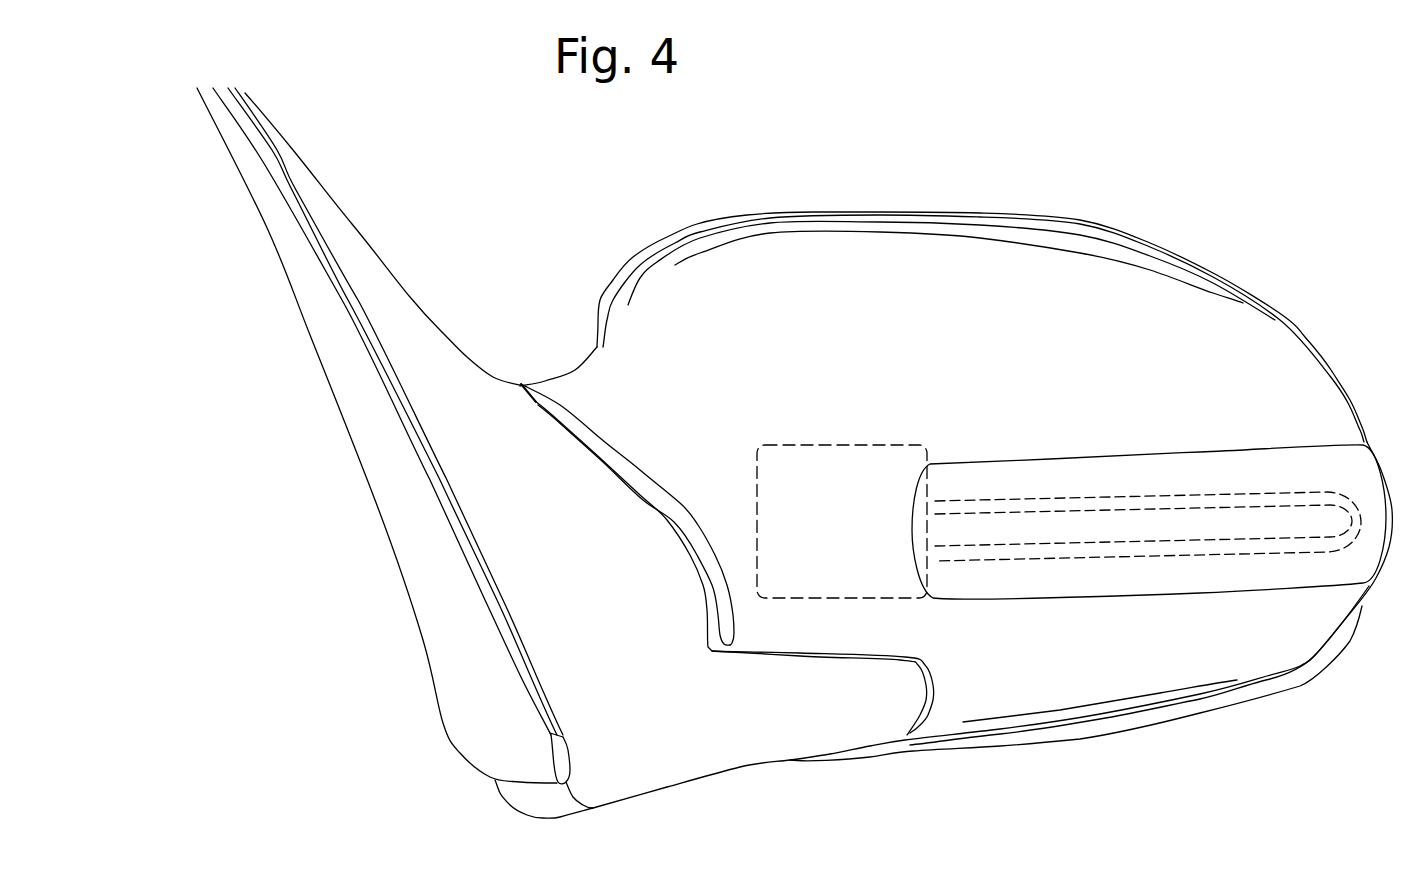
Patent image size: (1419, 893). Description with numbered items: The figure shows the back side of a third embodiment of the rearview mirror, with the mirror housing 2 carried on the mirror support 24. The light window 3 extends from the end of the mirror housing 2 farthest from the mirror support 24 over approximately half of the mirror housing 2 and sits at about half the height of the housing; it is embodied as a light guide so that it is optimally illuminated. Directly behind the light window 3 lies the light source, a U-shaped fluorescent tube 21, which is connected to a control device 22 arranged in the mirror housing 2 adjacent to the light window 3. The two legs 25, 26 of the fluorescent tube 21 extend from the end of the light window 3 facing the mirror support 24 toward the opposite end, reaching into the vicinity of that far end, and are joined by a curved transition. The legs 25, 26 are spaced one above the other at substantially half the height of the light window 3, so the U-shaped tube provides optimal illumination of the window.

The mirror housing 2 is at (1033, 273).
The light window 3 is at (1125, 457).
The fluorescent tube 21 is at (1166, 534).
The control device 22 is at (808, 453).
The mirror support 24 is at (422, 338).
The leg of the fluorescent tube 25 is at (1283, 500).
The leg of the fluorescent tube 26 is at (1277, 543).